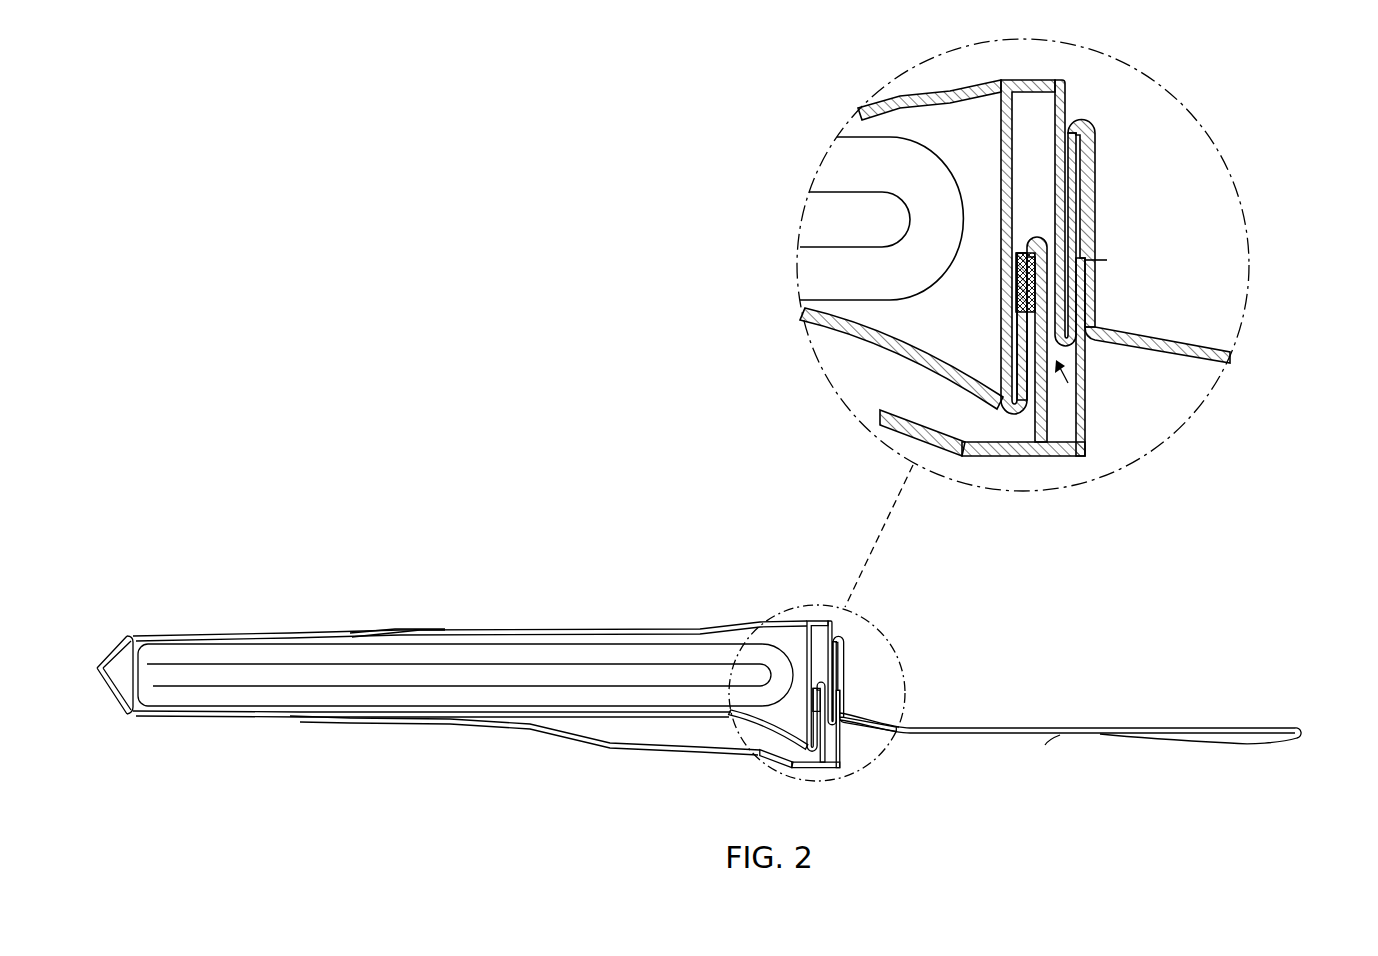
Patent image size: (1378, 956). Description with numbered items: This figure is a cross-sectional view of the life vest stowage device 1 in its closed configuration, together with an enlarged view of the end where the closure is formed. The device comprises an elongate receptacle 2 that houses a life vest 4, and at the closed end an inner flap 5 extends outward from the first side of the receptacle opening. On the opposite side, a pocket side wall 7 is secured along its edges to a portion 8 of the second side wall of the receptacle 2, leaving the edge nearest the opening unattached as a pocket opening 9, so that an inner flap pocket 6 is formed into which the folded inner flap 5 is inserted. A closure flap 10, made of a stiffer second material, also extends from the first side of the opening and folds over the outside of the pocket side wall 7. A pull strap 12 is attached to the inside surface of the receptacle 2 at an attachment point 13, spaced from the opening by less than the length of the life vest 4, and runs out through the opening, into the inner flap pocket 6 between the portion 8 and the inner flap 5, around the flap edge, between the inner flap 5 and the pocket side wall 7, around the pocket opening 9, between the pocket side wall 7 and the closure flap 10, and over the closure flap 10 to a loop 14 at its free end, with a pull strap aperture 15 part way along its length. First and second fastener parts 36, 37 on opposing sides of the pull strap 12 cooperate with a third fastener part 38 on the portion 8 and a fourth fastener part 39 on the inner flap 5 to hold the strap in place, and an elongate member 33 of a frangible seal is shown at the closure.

The life vest stowage device 1 is at (461, 558).
The receptacle 2 is at (906, 93).
The life vest 4 is at (842, 172).
The inner flap 5 is at (1083, 457).
The inner flap pocket 6 is at (1037, 120).
The pocket side wall 7 is at (1062, 100).
The portion of the second side wall 8 is at (1014, 116).
The pocket opening 9 is at (1086, 389).
The closure flap 10 is at (1048, 422).
The pull strap 12 is at (1232, 358).
The attachment point 13 is at (430, 630).
The loop 14 is at (1286, 726).
The pull strap aperture 15 is at (1094, 248).
The elongate member 33 is at (1107, 260).
The first fastener part 36 is at (1012, 318).
The second fastener part 37 is at (988, 408).
The third fastener part 38 is at (1028, 308).
The fourth fastener part 39 is at (1090, 300).